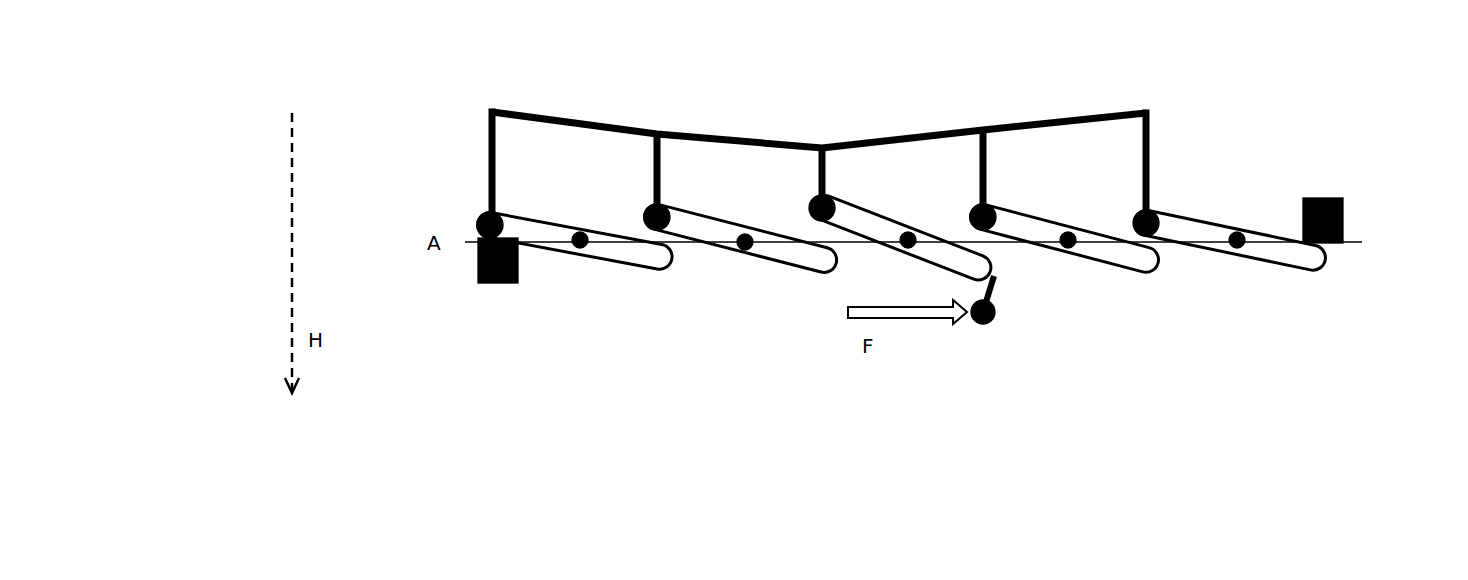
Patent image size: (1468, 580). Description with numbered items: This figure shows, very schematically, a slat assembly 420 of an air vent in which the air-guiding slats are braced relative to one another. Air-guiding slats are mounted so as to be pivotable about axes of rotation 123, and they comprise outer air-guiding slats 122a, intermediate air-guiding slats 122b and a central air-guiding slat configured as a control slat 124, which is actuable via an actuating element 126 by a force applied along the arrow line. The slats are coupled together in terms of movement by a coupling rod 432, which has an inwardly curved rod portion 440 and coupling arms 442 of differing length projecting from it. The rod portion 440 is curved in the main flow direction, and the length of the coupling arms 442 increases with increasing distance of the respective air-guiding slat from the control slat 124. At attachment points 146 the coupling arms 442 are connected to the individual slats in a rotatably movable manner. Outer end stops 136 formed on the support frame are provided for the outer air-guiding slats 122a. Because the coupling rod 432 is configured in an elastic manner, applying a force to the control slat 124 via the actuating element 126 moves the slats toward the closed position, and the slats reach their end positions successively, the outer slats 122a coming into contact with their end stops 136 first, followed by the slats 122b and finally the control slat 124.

The slat assembly 420 is at (1222, 130).
The rod portion 440 is at (695, 130).
The coupling arms 442 is at (485, 167).
The coupling rod 432 is at (760, 137).
The control slat 124 is at (853, 223).
The attachment points 146 is at (485, 212).
The axes of rotation 123 is at (570, 250).
The outer air-guiding slats 122a is at (608, 253).
The air-guiding slats 122b is at (783, 250).
The outer end stops 136 is at (478, 280).
The actuating element 126 is at (973, 320).